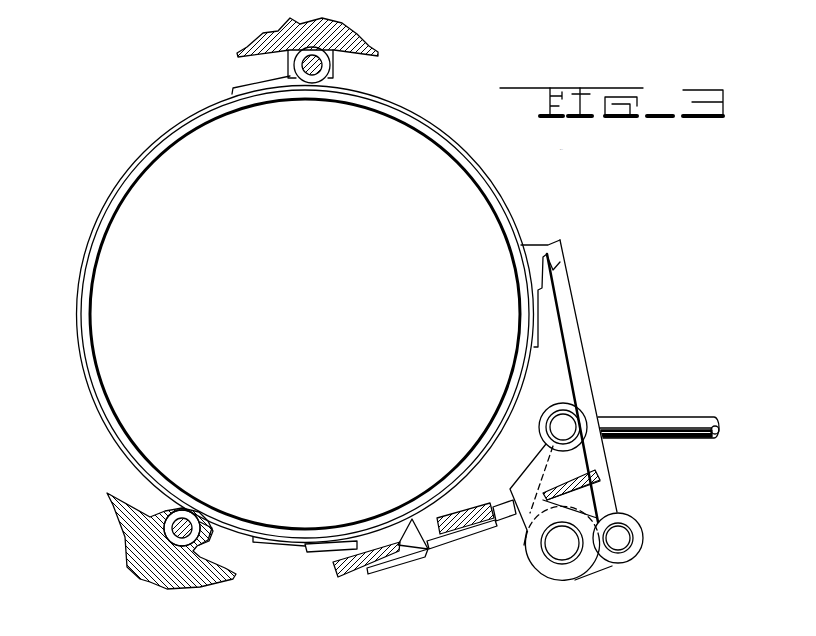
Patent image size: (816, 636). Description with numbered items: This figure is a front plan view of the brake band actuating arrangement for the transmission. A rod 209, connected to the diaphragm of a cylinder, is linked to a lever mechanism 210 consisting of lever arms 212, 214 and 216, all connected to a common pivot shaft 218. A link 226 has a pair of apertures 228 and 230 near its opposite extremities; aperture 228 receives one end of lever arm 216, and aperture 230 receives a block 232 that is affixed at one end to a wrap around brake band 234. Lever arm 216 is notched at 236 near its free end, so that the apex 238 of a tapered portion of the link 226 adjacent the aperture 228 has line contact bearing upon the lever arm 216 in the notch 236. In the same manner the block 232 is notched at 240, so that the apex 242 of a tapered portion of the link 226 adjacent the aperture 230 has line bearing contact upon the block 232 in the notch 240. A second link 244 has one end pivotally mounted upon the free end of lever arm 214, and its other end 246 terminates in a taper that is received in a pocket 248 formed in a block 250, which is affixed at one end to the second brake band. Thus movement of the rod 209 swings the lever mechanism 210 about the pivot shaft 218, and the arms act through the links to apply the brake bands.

The rod 209 is at (670, 425).
The lever mechanism 210 is at (599, 594).
The lever arm 212 is at (570, 458).
The lever arm 214 is at (607, 572).
The lever arm 216 is at (520, 537).
The common pivot shaft 218 is at (562, 548).
The link 226 is at (466, 509).
The aperture 228 is at (432, 535).
The aperture 230 is at (507, 512).
The block 232 is at (405, 560).
The wrap around brake band 234 is at (295, 537).
The notch 236 is at (582, 472).
The apex 238 is at (577, 500).
The notch 240 is at (373, 547).
The apex 242 is at (393, 545).
The link 244 is at (577, 367).
The other end 246 is at (553, 282).
The pocket 248 is at (556, 272).
The block 250 is at (543, 250).